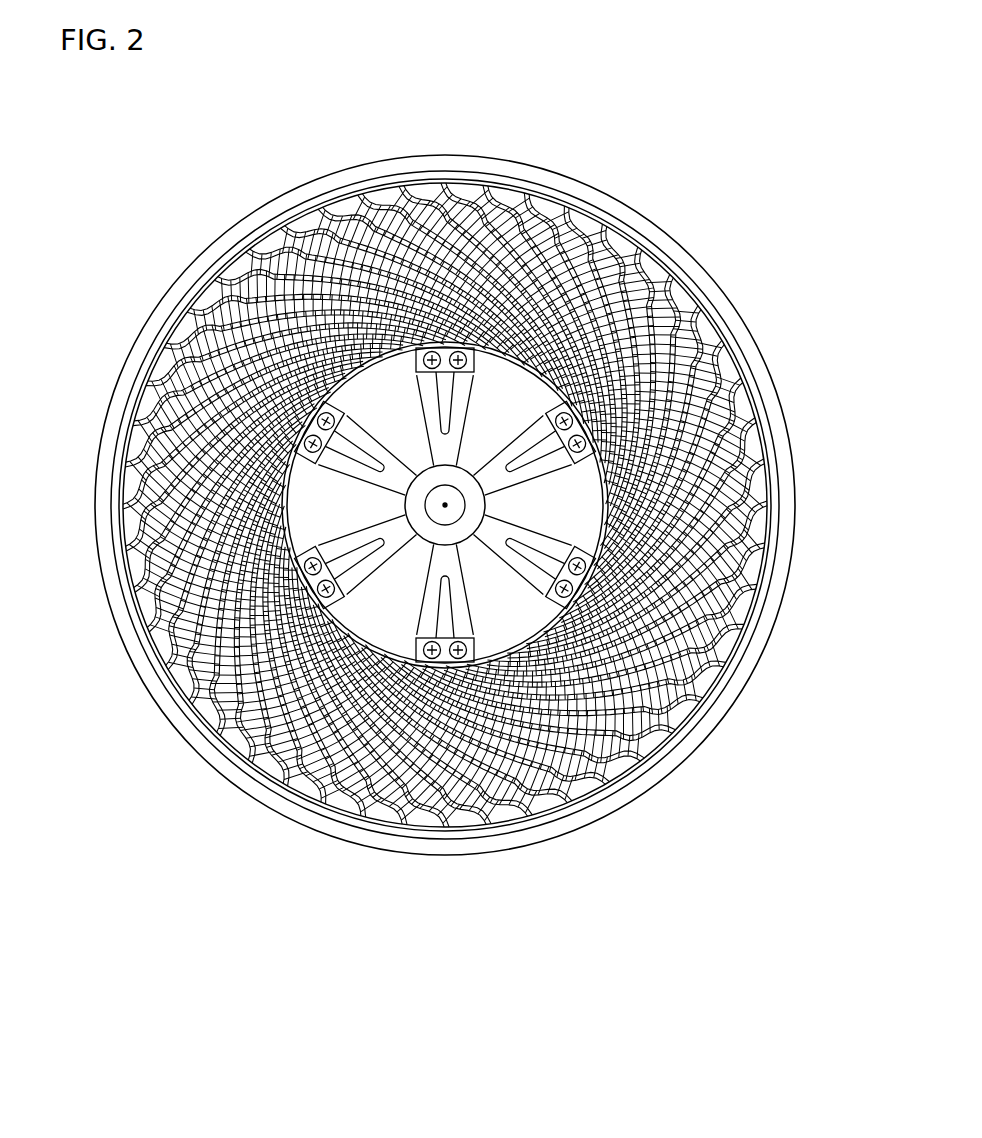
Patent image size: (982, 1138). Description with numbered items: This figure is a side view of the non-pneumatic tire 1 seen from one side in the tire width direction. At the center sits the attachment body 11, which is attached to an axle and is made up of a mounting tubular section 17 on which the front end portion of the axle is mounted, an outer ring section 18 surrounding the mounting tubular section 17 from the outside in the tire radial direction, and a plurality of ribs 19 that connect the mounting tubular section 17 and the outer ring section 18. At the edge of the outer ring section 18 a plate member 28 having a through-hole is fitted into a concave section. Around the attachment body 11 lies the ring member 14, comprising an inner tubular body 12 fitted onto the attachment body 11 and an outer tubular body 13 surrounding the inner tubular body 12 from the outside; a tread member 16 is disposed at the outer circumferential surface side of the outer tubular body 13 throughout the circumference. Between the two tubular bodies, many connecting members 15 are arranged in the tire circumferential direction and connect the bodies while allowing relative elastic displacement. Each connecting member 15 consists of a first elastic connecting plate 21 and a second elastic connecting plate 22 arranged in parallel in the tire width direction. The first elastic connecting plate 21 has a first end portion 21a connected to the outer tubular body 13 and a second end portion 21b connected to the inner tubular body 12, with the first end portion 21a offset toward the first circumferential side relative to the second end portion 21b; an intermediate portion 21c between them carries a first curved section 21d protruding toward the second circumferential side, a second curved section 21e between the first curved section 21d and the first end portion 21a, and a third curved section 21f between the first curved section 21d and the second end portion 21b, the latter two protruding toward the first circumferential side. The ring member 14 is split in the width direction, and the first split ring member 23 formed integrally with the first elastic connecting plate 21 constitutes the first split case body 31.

The non-pneumatic tire 1 is at (718, 100).
The attachment body 11 is at (830, 425).
The inner tubular body 12 is at (497, 338).
The outer tubular body 13 is at (595, 207).
The ring member 14 is at (640, 108).
The connecting member 15 is at (158, 160).
The tread member 16 is at (446, 155).
The mounting tubular section 17 is at (483, 503).
The outer ring section 18 is at (605, 486).
The ribs 19 is at (612, 518).
The first elastic connecting plate 21 is at (280, 253).
The first end portion 21a is at (300, 788).
The second end portion 21b is at (295, 530).
The intermediate portion 21c is at (258, 690).
The first curved section 21d is at (653, 660).
The second curved section 21e is at (712, 665).
The third curved section 21f is at (578, 728).
The second elastic connecting plate 22 is at (247, 280).
The first split ring member 23 is at (176, 706).
The plate member 28 is at (572, 400).
The first split case body 31 is at (76, 633).